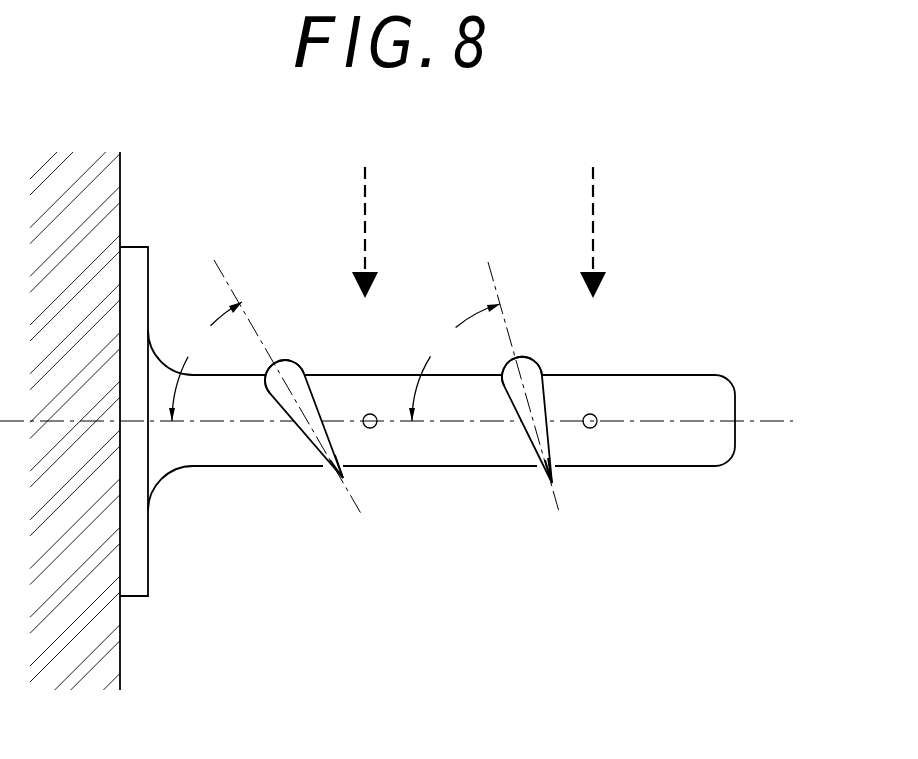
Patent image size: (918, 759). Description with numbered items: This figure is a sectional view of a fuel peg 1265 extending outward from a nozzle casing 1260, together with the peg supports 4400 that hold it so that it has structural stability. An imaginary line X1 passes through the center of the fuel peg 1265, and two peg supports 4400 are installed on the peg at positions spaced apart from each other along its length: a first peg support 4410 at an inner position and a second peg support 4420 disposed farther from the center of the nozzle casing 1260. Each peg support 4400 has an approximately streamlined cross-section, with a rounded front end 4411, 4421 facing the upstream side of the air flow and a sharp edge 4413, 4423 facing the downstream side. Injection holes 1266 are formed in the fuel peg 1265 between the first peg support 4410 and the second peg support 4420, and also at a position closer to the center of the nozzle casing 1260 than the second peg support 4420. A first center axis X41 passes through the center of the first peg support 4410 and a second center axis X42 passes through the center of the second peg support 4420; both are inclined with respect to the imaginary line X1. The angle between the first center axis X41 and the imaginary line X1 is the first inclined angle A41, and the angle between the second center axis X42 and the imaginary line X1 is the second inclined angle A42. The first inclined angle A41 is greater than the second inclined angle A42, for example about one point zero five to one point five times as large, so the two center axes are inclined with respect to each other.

The nozzle casing 1260 is at (72, 202).
The fuel peg 1265 is at (715, 398).
The injection holes 1266 is at (597, 419).
The peg support 4400 is at (445, 463).
The first peg support 4410 is at (564, 431).
The front end 4411 is at (521, 357).
The edge 4413 is at (585, 513).
The second peg support 4420 is at (338, 431).
The front end 4421 is at (290, 361).
The edge 4423 is at (348, 473).
The imaginary line X1 is at (409, 423).
The first center axis X41 is at (514, 371).
The second center axis X42 is at (280, 371).
The first inclined angle A41 is at (454, 362).
The second inclined angle A42 is at (205, 361).